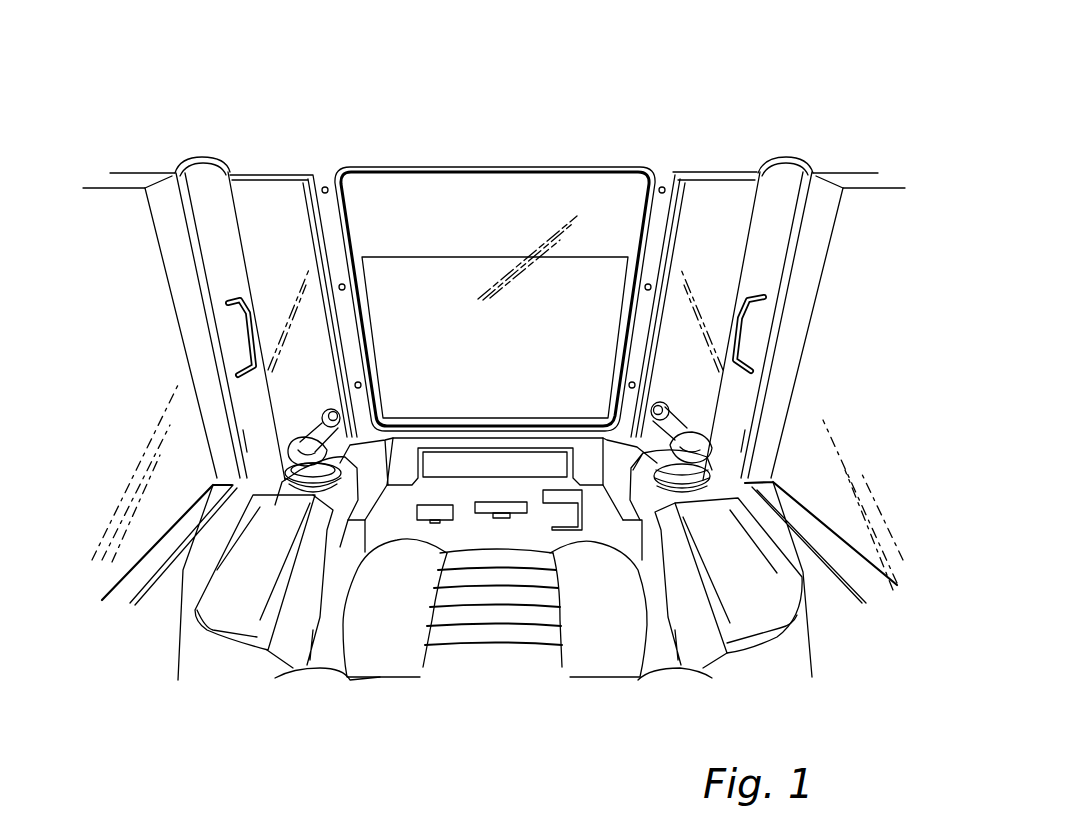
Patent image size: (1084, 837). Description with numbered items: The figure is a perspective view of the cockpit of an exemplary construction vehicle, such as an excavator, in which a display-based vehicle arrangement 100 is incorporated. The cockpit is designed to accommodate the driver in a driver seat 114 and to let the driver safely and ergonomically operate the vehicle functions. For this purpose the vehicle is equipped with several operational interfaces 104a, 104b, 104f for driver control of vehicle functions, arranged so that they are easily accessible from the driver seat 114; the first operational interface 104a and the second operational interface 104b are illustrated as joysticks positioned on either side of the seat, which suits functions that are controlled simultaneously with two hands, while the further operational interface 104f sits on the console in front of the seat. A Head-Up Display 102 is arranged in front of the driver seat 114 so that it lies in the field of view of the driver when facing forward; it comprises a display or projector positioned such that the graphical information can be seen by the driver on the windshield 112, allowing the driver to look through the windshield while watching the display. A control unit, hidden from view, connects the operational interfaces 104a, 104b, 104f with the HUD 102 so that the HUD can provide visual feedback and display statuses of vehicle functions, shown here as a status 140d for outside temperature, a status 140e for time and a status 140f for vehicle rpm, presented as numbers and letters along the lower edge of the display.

The display-based vehicle arrangement 100 is at (352, 92).
The Head-Up Display (HUD) 102 is at (462, 262).
The windshield 112 is at (590, 182).
The first operational interface 104a is at (690, 420).
The second operational interface 104b is at (308, 437).
The operational interface 104f is at (561, 500).
The driver seat 114 is at (388, 652).
The status of a vehicle function 140d is at (400, 377).
The status of a vehicle function 140e is at (488, 380).
The status of a vehicle function 140f is at (563, 377).